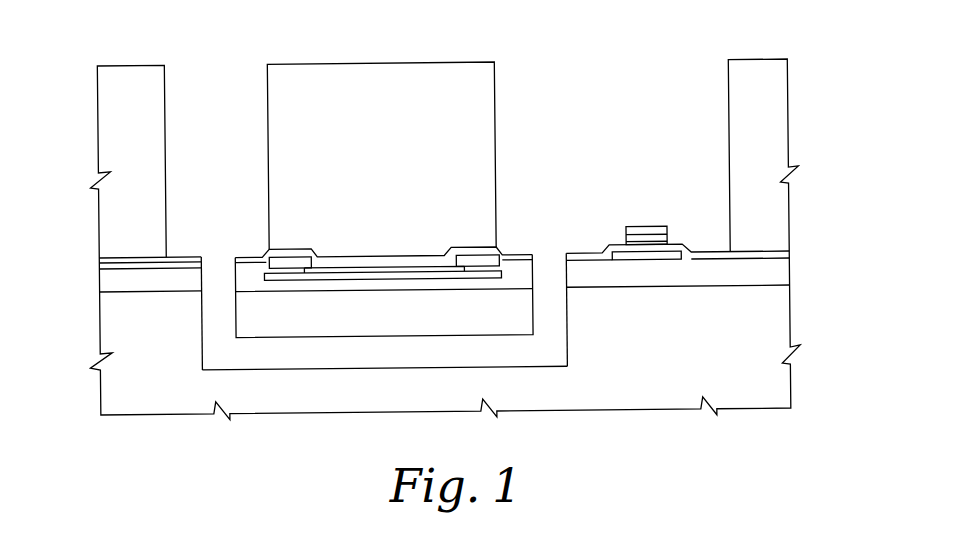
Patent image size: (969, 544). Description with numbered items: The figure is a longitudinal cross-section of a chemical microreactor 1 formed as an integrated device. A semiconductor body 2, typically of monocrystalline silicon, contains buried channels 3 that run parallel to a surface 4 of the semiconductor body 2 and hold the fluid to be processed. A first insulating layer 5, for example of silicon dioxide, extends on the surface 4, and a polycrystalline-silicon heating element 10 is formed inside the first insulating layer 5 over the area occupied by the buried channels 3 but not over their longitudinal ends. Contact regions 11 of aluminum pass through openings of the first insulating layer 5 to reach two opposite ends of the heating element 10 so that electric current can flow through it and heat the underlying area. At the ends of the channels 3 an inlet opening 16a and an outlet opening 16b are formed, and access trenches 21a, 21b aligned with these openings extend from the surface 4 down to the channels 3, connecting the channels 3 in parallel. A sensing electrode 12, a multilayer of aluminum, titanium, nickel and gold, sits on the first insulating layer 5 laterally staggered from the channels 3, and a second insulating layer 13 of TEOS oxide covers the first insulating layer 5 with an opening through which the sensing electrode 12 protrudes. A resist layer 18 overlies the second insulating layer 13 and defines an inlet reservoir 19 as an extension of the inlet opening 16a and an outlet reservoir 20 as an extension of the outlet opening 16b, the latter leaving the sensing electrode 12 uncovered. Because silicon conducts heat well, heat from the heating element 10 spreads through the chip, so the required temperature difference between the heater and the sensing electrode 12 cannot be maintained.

The microreactor 1 is at (824, 154).
The semiconductor body 2 is at (752, 410).
The buried channels 3 is at (487, 368).
The surface 4 is at (132, 288).
The first insulating layer 5 is at (107, 278).
The heating element 10 is at (362, 281).
The contact regions 11 is at (285, 270).
The sensing electrode 12 is at (650, 236).
The second insulating layer 13 is at (180, 260).
The inlet opening 16a is at (217, 259).
The outlet opening 16b is at (548, 264).
The resist layer 18 is at (121, 102).
The inlet reservoir 19 is at (227, 120).
The outlet reservoir 20 is at (613, 139).
The access trench 21a is at (220, 314).
The access trench 21b is at (550, 325).